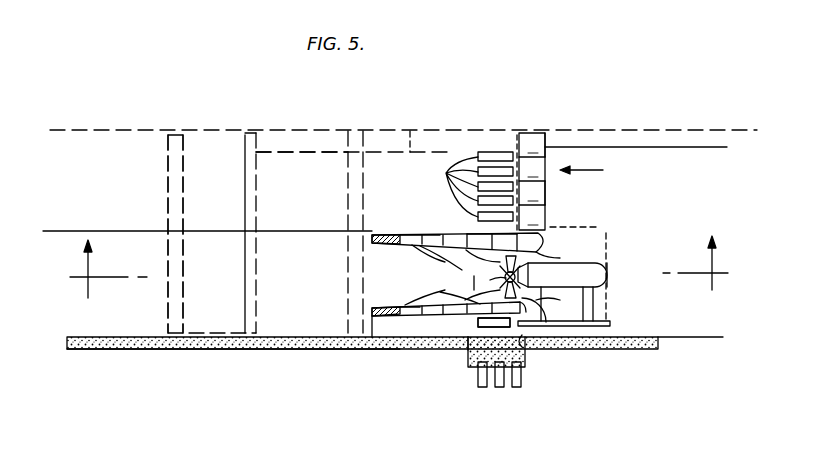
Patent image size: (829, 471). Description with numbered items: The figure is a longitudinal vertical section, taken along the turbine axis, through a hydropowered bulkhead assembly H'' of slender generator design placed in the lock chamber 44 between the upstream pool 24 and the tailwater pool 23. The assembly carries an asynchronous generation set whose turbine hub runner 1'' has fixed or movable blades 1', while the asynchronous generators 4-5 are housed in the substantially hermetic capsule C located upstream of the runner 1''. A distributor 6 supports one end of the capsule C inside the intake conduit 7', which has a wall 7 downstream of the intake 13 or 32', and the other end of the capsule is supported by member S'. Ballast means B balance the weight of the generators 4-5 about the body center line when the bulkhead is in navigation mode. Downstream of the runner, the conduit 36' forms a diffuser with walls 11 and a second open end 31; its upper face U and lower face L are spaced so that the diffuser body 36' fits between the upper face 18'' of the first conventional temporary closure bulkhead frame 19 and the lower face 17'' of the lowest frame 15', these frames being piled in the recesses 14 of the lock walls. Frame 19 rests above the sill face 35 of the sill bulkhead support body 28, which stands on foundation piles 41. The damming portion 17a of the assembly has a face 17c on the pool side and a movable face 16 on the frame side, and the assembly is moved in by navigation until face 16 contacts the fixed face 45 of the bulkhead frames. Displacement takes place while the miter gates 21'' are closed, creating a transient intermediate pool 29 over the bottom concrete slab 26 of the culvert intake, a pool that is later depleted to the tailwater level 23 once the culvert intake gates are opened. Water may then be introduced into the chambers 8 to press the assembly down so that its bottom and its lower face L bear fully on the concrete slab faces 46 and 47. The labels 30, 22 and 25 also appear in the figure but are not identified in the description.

The upstream region 30 is at (140, 190).
The miter gates 21'' is at (199, 234).
The intermediate section 25 is at (315, 198).
The transient intermediate pool 29 is at (408, 123).
The tailwater pool 23 is at (85, 222).
The distributor 6 is at (399, 267).
The lock chamber 44 is at (53, 321).
The floor strip 22 is at (170, 338).
The bottom concrete slab 26 is at (222, 350).
The concrete slab face 46 is at (636, 350).
The concrete slab face 47 is at (370, 335).
The sill bulkhead support body 28 is at (496, 352).
The foundation piles 41 is at (521, 378).
The first conventional temporary closure bulkhead frame 19 is at (478, 330).
The sill face 35 is at (482, 340).
The downstream face of damming portion 16 is at (520, 137).
The upper face of frame 18'' is at (463, 327).
The ballast means B is at (386, 232).
The diffuser body upper face U is at (418, 233).
The lower face of lowest frame 17'' is at (472, 218).
The diffuser body lower face L is at (445, 320).
The diffuser conduit walls 11 is at (398, 304).
The second open end 31 is at (374, 280).
The diffuser conduit 36' is at (415, 275).
The chambers 8 is at (458, 275).
The blades 1' is at (474, 275).
The turbine hub runner 1'' is at (492, 281).
The asynchronous generators 4-5 is at (553, 277).
The intake conduit 7' is at (552, 247).
The intake conduit wall 7 is at (548, 298).
The intake 13 is at (567, 304).
The capsule C is at (610, 272).
The capsule support member S' is at (578, 312).
The intake 32' is at (617, 261).
The pool-side face 17c is at (548, 143).
The damming portion 17a is at (549, 186).
The recesses 14 is at (503, 130).
The hydropowered bulkhead assembly H'' is at (594, 170).
The fixed face of bulkhead frames 45 is at (492, 153).
The lowest conventional temporary closure bulkhead frame 15' is at (449, 187).
The upstream pool 24 is at (650, 142).